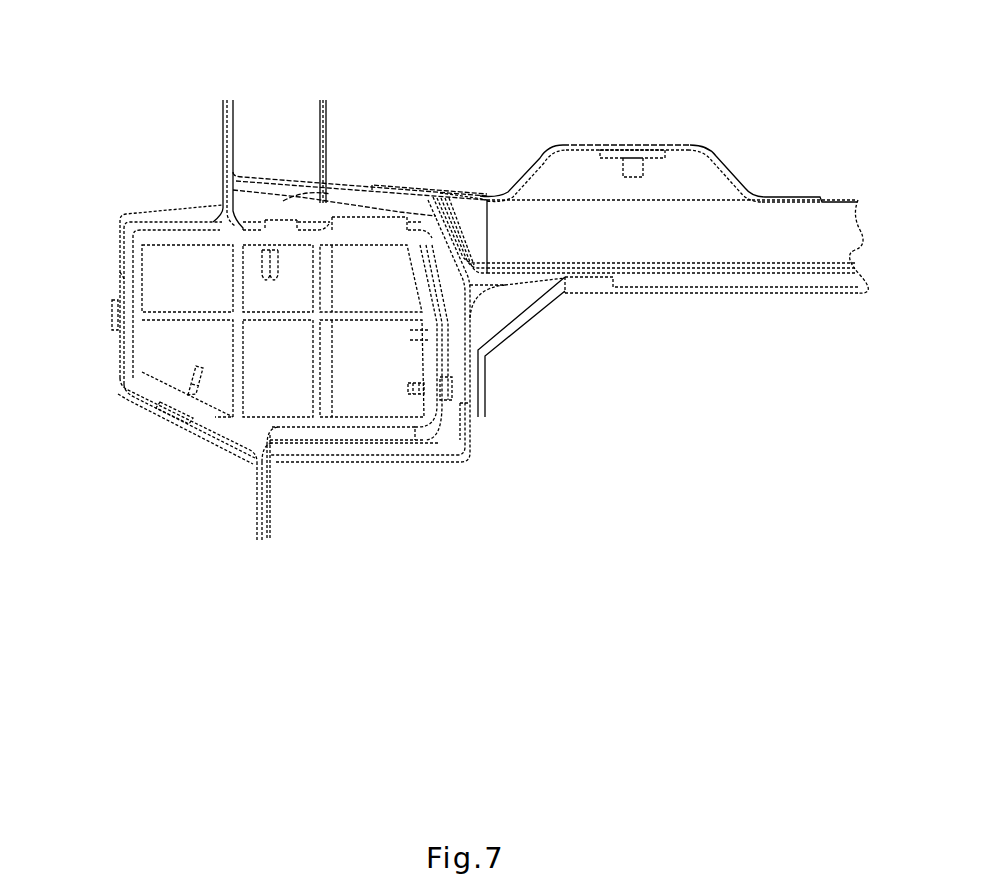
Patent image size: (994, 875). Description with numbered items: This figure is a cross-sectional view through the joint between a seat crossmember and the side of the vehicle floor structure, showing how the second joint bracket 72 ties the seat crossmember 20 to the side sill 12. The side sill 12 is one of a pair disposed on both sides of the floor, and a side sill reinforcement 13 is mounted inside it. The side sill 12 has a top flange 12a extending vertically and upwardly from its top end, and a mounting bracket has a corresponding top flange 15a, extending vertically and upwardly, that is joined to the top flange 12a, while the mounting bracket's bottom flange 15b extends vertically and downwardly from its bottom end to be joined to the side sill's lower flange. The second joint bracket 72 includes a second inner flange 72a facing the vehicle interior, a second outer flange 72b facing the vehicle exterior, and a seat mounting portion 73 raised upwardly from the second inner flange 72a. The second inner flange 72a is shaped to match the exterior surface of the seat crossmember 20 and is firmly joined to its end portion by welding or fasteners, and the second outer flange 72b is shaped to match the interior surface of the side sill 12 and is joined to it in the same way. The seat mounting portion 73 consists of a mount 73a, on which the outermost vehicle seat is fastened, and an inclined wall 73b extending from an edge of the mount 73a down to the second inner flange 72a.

The side sill 12 is at (357, 186).
The top flange 12a is at (236, 133).
The side sill reinforcement 13 is at (116, 379).
The top flange 15a is at (222, 133).
The bottom flange 15b is at (256, 497).
The seat crossmember 20 is at (848, 232).
The second joint bracket 72 is at (658, 100).
The second inner flange 72a is at (802, 195).
The second outer flange 72b is at (428, 186).
The seat mounting portion 73 is at (586, 126).
The mount 73a is at (694, 143).
The inclined wall 73b is at (741, 171).